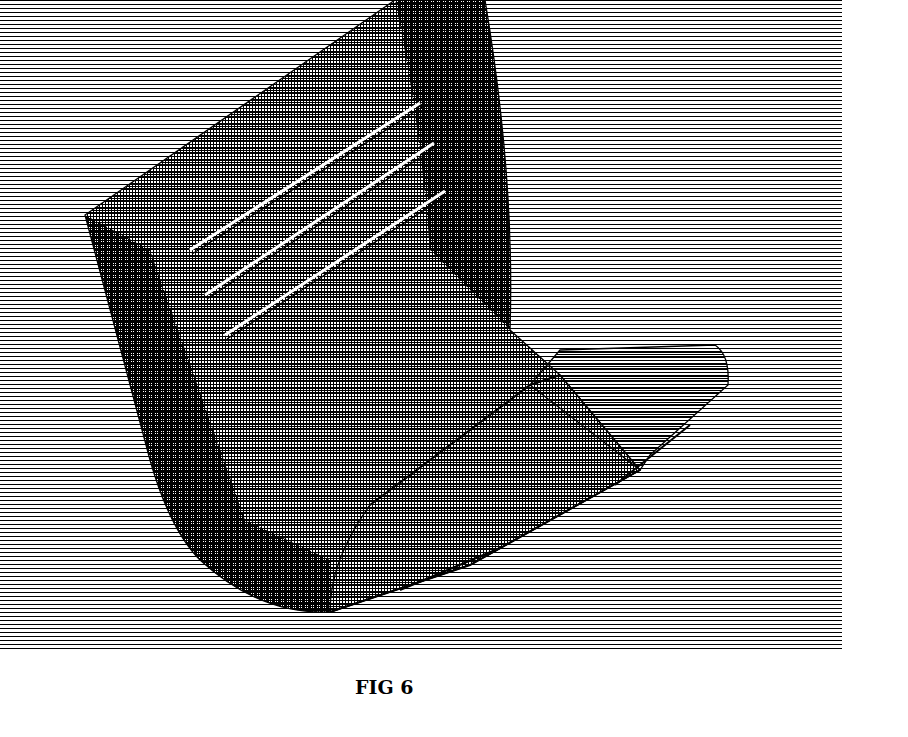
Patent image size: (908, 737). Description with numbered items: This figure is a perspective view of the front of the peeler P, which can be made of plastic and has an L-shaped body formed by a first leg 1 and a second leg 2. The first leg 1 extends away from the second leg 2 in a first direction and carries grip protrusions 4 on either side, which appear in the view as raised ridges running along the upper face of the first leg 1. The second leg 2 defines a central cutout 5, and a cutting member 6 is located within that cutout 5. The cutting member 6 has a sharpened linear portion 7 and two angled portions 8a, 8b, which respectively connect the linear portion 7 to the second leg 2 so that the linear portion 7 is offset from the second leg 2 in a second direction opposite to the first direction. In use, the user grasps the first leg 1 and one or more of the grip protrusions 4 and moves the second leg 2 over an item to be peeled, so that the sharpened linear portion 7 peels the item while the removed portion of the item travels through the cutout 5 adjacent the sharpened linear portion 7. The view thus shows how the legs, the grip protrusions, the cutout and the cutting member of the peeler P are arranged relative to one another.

The first leg 1 is at (177, 383).
The second leg 2 is at (648, 340).
The grip protrusions 4 is at (443, 193).
The central cutout 5 is at (530, 428).
The cutting member 6 is at (532, 550).
The sharpened linear portion 7 is at (538, 498).
The angled portion 8a is at (447, 567).
The angled portion 8b is at (645, 453).
The peeler P is at (162, 146).